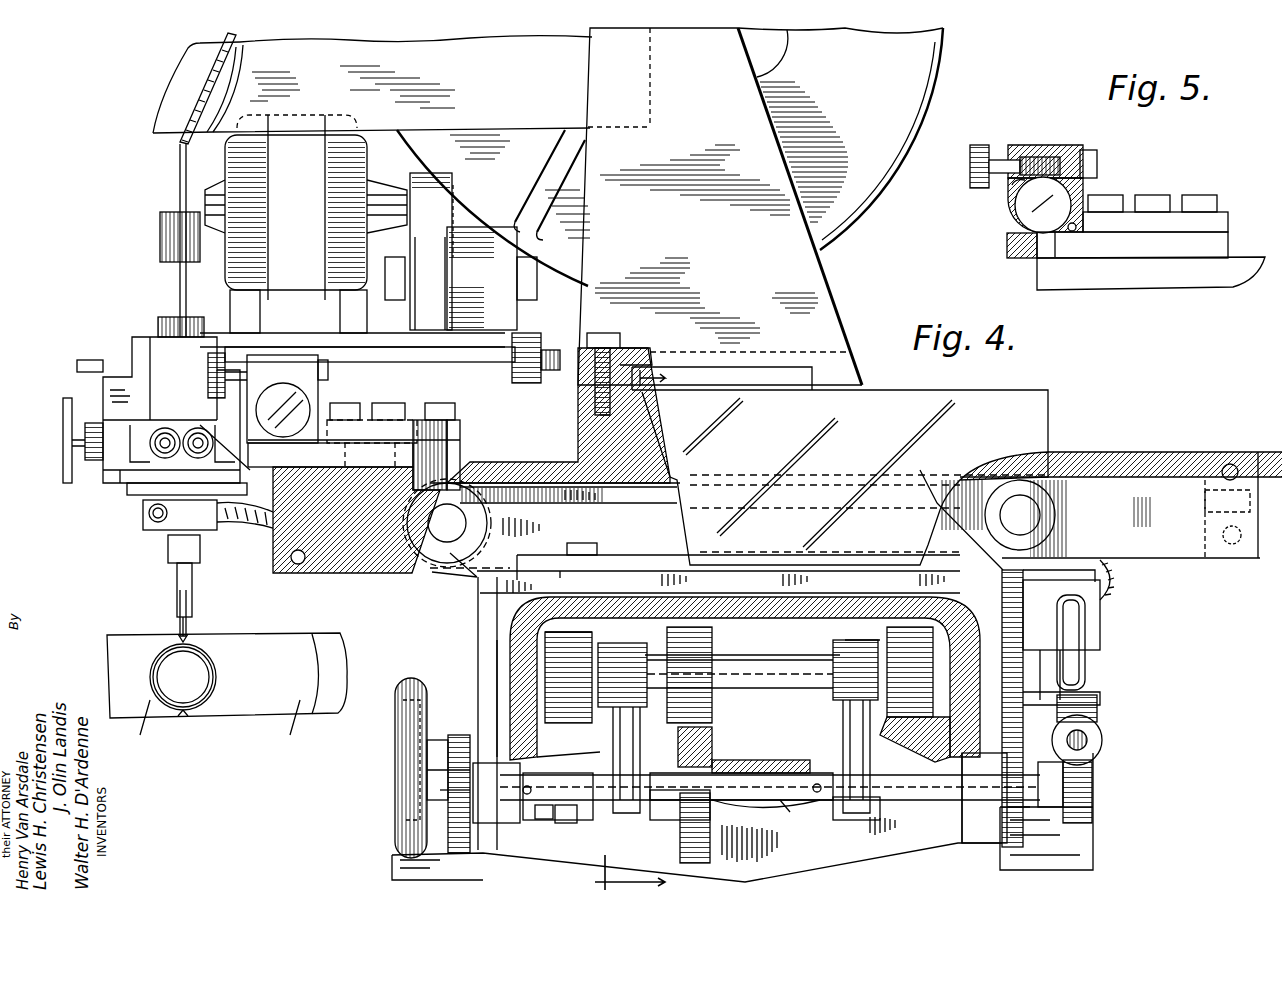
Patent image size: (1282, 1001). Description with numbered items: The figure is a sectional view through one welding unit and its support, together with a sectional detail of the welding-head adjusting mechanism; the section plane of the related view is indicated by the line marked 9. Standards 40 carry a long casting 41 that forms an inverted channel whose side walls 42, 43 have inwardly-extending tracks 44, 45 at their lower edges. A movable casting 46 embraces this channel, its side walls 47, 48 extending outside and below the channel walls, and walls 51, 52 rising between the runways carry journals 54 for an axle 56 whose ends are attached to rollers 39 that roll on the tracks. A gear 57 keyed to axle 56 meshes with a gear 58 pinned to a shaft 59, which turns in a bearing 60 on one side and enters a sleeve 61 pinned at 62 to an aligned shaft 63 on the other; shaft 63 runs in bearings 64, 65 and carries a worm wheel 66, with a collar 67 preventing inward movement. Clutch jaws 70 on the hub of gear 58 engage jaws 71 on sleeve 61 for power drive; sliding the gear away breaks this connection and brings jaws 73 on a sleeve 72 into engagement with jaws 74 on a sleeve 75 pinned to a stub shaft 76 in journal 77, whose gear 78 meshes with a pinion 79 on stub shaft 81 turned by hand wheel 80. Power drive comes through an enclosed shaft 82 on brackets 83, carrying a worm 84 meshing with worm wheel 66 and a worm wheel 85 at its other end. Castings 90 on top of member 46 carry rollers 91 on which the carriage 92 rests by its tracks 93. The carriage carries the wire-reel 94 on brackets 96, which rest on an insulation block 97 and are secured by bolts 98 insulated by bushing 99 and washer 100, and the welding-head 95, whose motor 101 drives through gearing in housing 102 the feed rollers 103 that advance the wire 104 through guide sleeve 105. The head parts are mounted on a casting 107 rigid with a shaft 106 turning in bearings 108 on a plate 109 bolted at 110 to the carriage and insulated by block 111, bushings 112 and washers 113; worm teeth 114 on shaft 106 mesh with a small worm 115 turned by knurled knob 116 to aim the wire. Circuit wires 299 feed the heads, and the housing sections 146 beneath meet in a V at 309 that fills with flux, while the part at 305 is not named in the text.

In FIG. 4, the section line 9- 9 is at (693, 630).
In FIG. 4, the roller 39 is at (575, 630).
In FIG. 4, the standard 40 is at (392, 862).
In FIG. 4, the casting 41 is at (790, 612).
In FIG. 4, the side wall 42 is at (500, 618).
In FIG. 4, the side wall 43 is at (1085, 635).
In FIG. 4, the track 44 is at (565, 715).
In FIG. 4, the track 45 is at (905, 715).
In FIG. 4, the casting 46 is at (758, 570).
In FIG. 4, the side wall 47 is at (478, 600).
In FIG. 4, the side wall 48 is at (990, 605).
In FIG. 4, the wall 51 is at (640, 735).
In FIG. 4, the wall 52 is at (860, 720).
In FIG. 4, the journal 54 is at (620, 640).
In FIG. 4, the axle 56 is at (810, 660).
In FIG. 4, the gear 57 is at (712, 645).
In FIG. 4, the gear 58 is at (712, 850).
In FIG. 4, the shaft 59 is at (740, 780).
In FIG. 4, the bearing 60 is at (640, 795).
In FIG. 4, the sleeve 61 is at (805, 800).
In FIG. 4, the pin 62 is at (817, 792).
In FIG. 4, the shaft 63 is at (785, 780).
In FIG. 4, the bearing 64 is at (860, 800).
In FIG. 4, the bearing 65 is at (1010, 812).
In FIG. 4, the worm wheel 66 is at (1080, 795).
In FIG. 4, the collar 67 is at (1063, 775).
In FIG. 4, the clutch jaws 70 is at (728, 800).
In FIG. 4, the clutch jaws 71 is at (720, 745).
In FIG. 4, the sleeve 72 is at (570, 825).
In FIG. 4, the clutch jaws 73 is at (565, 823).
In FIG. 4, the clutch jaws 74 is at (470, 690).
In FIG. 4, the sleeve 75 is at (525, 800).
In FIG. 4, the stub shaft 76 is at (548, 820).
In FIG. 4, the journal 77 is at (438, 790).
In FIG. 4, the gear 78 is at (458, 735).
In FIG. 4, the pinion 79 is at (400, 740).
In FIG. 4, the hand wheel 80 is at (412, 768).
In FIG. 4, the stub shaft 81 is at (425, 795).
In FIG. 4, the enclosed shaft 82 is at (1072, 658).
In FIG. 4, the bracket 83 is at (1090, 570).
In FIG. 4, the worm 84 is at (1100, 725).
In FIG. 4, the worm wheel 85 is at (1115, 578).
In FIG. 4, the casting 90 is at (525, 560).
In FIG. 4, the roller 91 is at (440, 540).
In FIG. 4, the carriage 92 is at (988, 393).
In FIG. 5, the carriage 92 is at (1225, 275).
In FIG. 4, the track 93 is at (1185, 490).
In FIG. 4, the wire-reel 94 is at (946, 70).
In FIG. 4, the welding-head 95 is at (150, 330).
In FIG. 4, the bracket 96 is at (778, 250).
In FIG. 4, the insulation block 97 is at (860, 390).
In FIG. 4, the bolt 98 is at (605, 333).
In FIG. 4, the insulating bushing 99 is at (640, 350).
In FIG. 4, the washer 100 is at (612, 350).
In FIG. 4, the motor 101 is at (306, 224).
In FIG. 4, the housing 102 is at (461, 251).
In FIG. 4, the wire feed rollers 103 is at (195, 455).
In FIG. 4, the wire 104 is at (170, 158).
In FIG. 4, the guide sleeve 105 is at (177, 575).
In FIG. 4, the shaft 106 is at (290, 450).
In FIG. 5, the shaft 106 is at (1050, 215).
In FIG. 4, the casting 107 is at (380, 335).
In FIG. 4, the bearing 108 is at (287, 399).
In FIG. 5, the bearing 108 is at (1022, 218).
In FIG. 4, the plate 109 is at (380, 470).
In FIG. 5, the plate 109 is at (1200, 245).
In FIG. 4, the bolt 110 is at (440, 408).
In FIG. 5, the bolt 110 is at (1200, 193).
In FIG. 4, the insulation block 111 is at (356, 520).
In FIG. 5, the insulation block 111 is at (1020, 260).
In FIG. 4, the insulating bushing 112 is at (460, 452).
In FIG. 4, the washer 113 is at (460, 438).
In FIG. 5, the washer 113 is at (1228, 218).
In FIG. 5, the worm teeth 114 is at (1020, 205).
In FIG. 5, the worm 115 is at (1045, 147).
In FIG. 4, the knurled knob 116 is at (225, 368).
In FIG. 5, the knurled knob 116 is at (985, 145).
In FIG. 4, the housing section 146 is at (219, 728).
In FIG. 4, the circuit wires 299 is at (258, 530).
In FIG. 4, the opening 305 is at (216, 677).
In FIG. 4, the V 309 is at (178, 636).